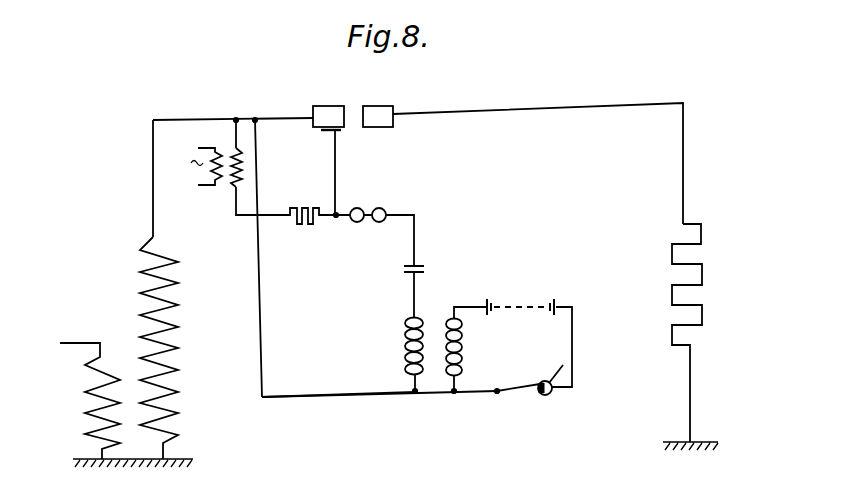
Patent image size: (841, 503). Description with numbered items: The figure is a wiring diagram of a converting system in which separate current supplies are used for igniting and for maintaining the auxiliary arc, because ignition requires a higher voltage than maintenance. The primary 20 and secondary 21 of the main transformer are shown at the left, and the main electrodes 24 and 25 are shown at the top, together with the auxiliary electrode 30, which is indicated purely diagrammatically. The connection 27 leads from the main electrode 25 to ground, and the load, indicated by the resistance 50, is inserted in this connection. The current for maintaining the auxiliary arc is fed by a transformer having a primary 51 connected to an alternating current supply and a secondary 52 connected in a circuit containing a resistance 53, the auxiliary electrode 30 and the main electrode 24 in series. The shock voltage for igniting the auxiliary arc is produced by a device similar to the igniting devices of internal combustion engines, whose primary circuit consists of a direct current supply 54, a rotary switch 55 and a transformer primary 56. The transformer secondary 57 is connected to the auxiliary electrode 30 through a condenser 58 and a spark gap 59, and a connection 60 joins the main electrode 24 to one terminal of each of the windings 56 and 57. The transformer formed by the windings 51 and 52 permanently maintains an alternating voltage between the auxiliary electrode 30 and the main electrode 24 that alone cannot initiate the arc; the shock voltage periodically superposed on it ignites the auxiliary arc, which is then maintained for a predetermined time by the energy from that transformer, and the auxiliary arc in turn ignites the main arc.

The primary of the main transformer 20 is at (88, 412).
The secondary of the main transformer 21 is at (177, 400).
The main electrode 24 is at (325, 100).
The main electrode 25 is at (379, 106).
The connection to ground 27 is at (573, 104).
The auxiliary electrode 30 is at (325, 133).
The resistance 50 is at (702, 312).
The transformer primary 51 is at (207, 162).
The transformer secondary 52 is at (243, 175).
The resistance 53 is at (317, 226).
The direct current supply 54 is at (514, 303).
The rotary switch 55 is at (538, 392).
The transformer primary 56 is at (463, 372).
The transformer secondary 57 is at (404, 347).
The condenser 58 is at (425, 266).
The spark gap 59 is at (375, 225).
The connection 60 is at (348, 396).